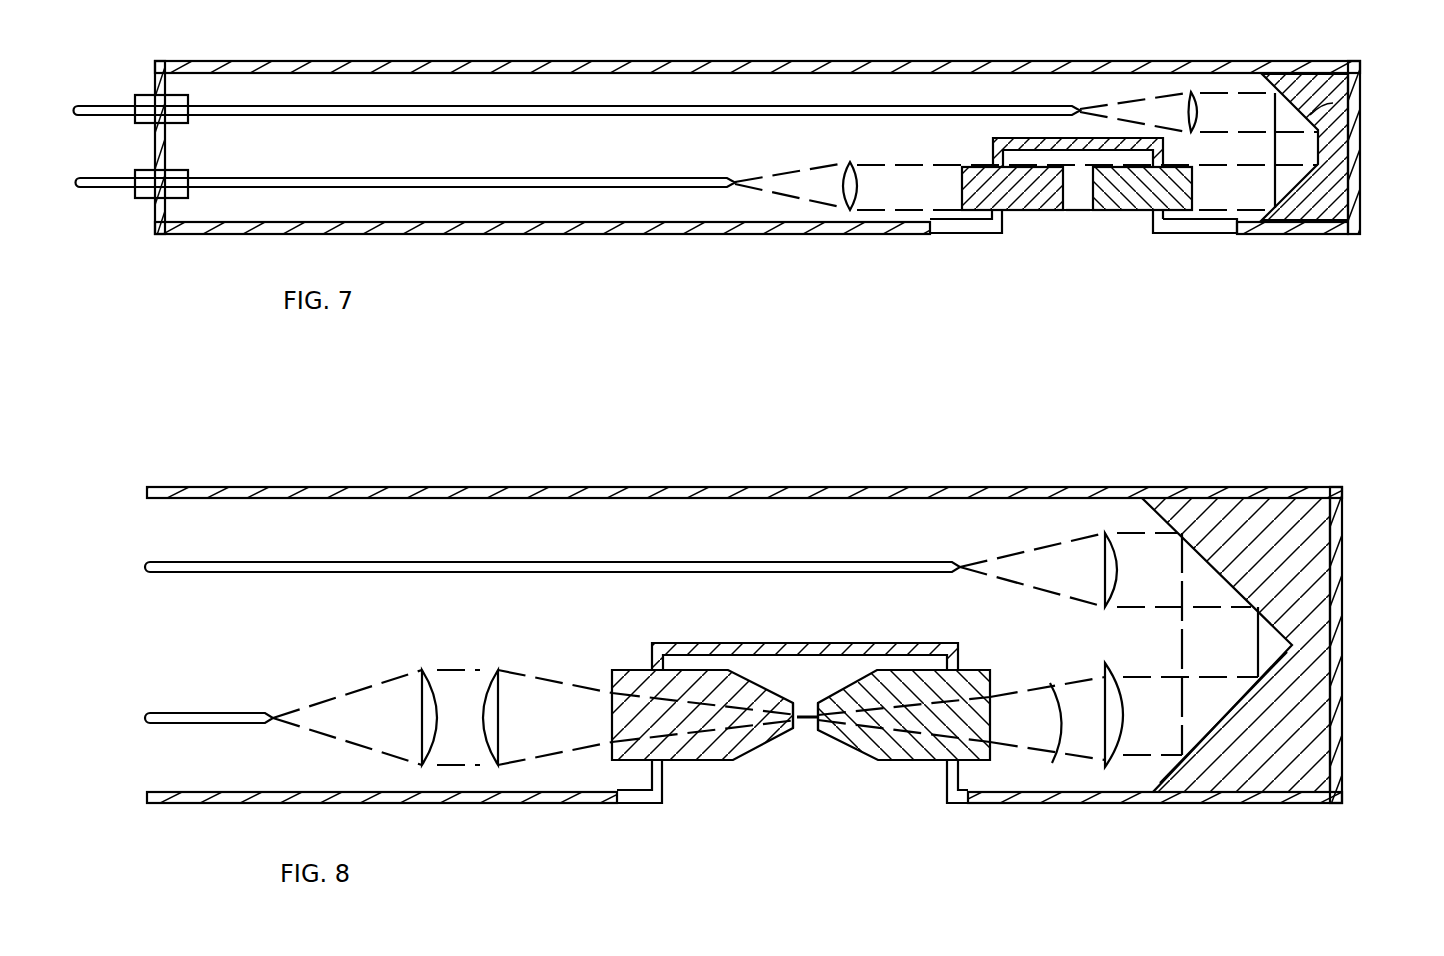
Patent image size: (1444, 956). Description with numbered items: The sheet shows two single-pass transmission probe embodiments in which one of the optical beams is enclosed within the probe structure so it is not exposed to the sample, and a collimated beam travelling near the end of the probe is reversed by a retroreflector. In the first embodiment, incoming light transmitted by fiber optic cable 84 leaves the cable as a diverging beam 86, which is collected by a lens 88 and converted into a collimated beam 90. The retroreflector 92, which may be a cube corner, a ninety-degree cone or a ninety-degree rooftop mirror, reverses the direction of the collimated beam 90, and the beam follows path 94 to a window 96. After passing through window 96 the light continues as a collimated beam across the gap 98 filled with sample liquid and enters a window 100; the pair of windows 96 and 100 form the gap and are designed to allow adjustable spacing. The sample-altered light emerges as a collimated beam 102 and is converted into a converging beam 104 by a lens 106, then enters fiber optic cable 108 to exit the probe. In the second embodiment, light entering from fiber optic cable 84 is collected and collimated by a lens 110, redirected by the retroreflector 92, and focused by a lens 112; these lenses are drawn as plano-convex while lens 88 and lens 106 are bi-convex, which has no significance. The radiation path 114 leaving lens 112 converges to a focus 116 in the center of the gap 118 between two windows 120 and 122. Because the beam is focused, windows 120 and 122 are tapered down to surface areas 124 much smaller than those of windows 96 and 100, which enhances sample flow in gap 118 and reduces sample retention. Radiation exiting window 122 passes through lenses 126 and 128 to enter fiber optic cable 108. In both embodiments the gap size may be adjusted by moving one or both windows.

In FIG. 7, the fiber optic cable 84 is at (612, 106).
In FIG. 8, the fiber optic cable 84 is at (830, 562).
In FIG. 7, the diverging beam 86 is at (1112, 103).
In FIG. 7, the lens 88 is at (1190, 95).
In FIG. 7, the collimated beam 90 is at (1225, 92).
In FIG. 7, the retroreflector 92 is at (1352, 93).
In FIG. 8, the retroreflector 92 is at (1205, 547).
In FIG. 7, the path 94 is at (1233, 213).
In FIG. 7, the window 96 is at (1127, 211).
In FIG. 7, the gap 98 is at (1085, 211).
In FIG. 7, the window 100 is at (1037, 211).
In FIG. 7, the collimated beam 102 is at (933, 214).
In FIG. 7, the converging beam 104 is at (764, 190).
In FIG. 7, the lens 106 is at (857, 193).
In FIG. 7, the fiber optic cable 108 is at (447, 187).
In FIG. 8, the fiber optic cable 108 is at (220, 723).
In FIG. 8, the lens 110 is at (1113, 540).
In FIG. 8, the lens 112 is at (1122, 737).
In FIG. 8, the radiation path 114 is at (1037, 747).
In FIG. 8, the focus 116 is at (806, 722).
In FIG. 8, the gap 118 is at (808, 712).
In FIG. 8, the window 120 is at (895, 760).
In FIG. 8, the window 122 is at (688, 760).
In FIG. 8, the surface areas 124 is at (818, 731).
In FIG. 8, the lens 126 is at (483, 745).
In FIG. 8, the lens 128 is at (436, 742).